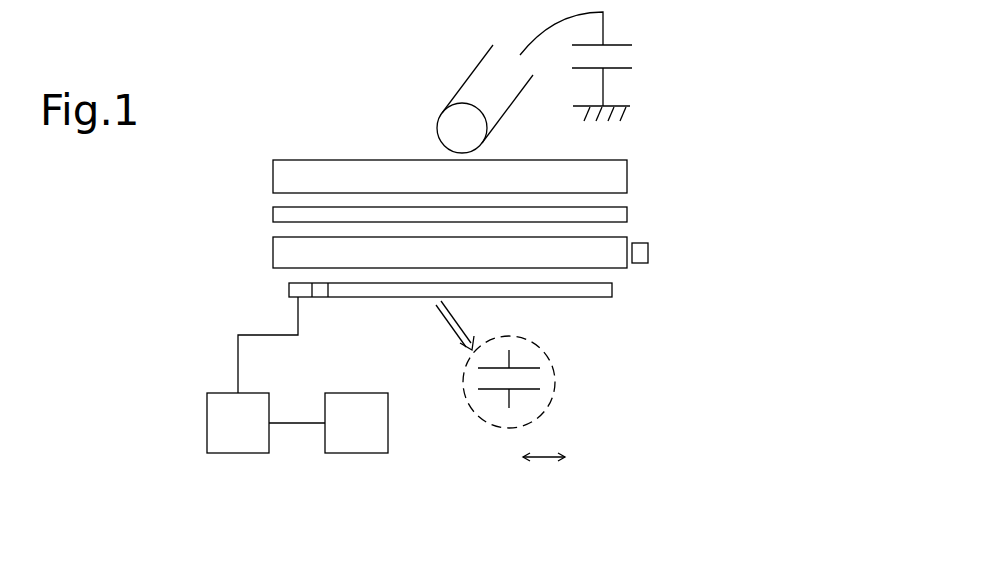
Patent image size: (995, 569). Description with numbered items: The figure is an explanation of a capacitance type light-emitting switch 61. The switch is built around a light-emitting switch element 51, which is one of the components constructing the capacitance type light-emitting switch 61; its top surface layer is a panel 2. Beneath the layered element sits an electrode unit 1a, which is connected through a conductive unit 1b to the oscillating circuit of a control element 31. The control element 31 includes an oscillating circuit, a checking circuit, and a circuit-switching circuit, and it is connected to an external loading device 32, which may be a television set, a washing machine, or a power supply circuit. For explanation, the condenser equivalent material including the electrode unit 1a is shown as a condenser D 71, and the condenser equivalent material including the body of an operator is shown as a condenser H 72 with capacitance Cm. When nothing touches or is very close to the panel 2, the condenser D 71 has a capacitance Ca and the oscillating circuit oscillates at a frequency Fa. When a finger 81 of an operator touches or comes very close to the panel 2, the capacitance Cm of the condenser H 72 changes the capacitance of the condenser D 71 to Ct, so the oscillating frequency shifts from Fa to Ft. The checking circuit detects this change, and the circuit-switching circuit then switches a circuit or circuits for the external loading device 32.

The electrode unit 1a is at (592, 295).
The conductive unit 1b is at (305, 290).
The panel 2 is at (615, 178).
The control element 31 is at (228, 440).
The external loading device 32 is at (362, 437).
The light-emitting switch element 51 is at (258, 152).
The capacitance type light-emitting switch 61 is at (302, 117).
The condenser D 71 is at (543, 380).
The condenser H 72 is at (632, 57).
The finger 81 is at (475, 83).